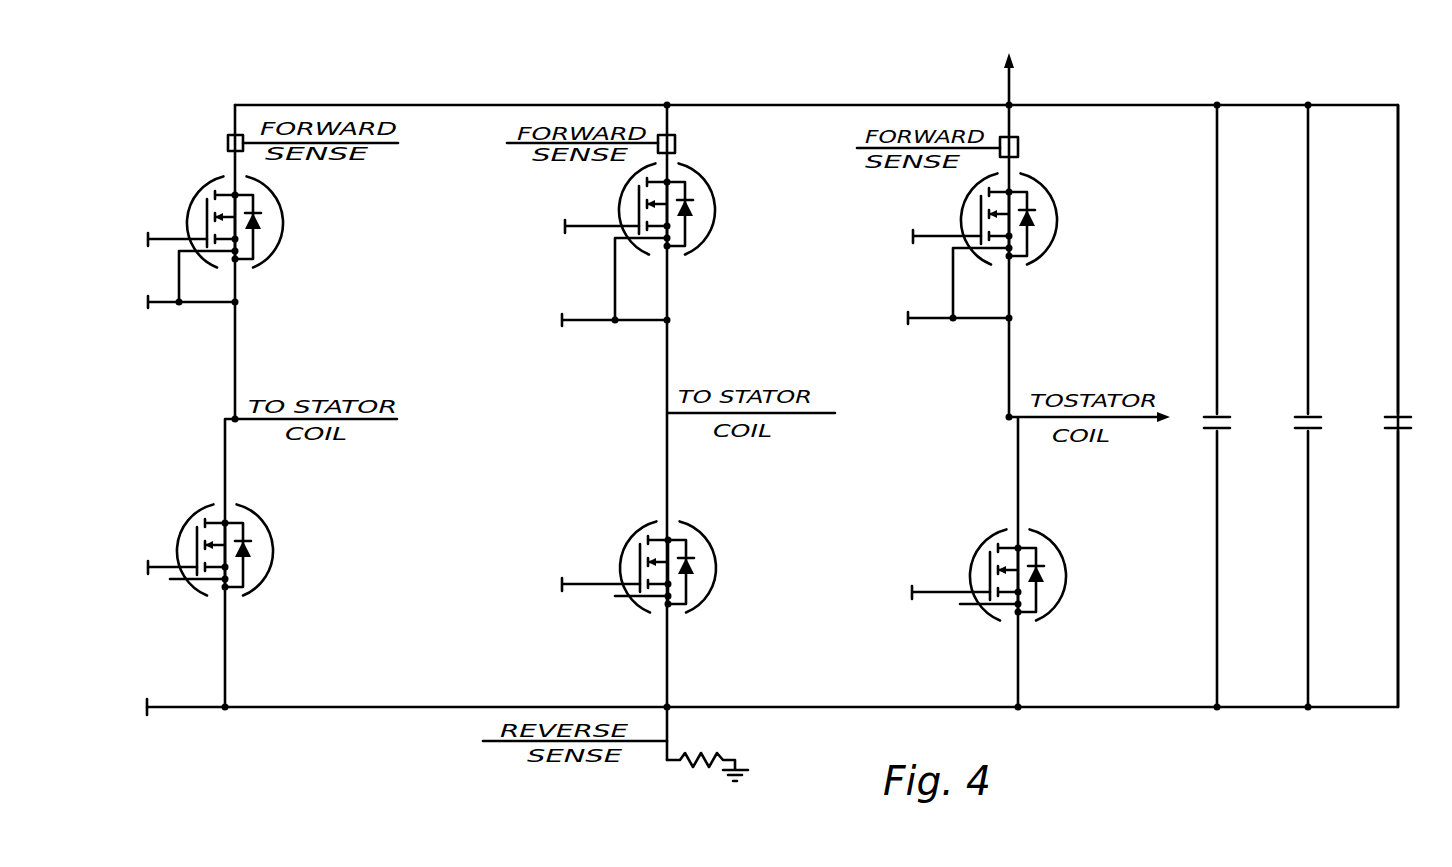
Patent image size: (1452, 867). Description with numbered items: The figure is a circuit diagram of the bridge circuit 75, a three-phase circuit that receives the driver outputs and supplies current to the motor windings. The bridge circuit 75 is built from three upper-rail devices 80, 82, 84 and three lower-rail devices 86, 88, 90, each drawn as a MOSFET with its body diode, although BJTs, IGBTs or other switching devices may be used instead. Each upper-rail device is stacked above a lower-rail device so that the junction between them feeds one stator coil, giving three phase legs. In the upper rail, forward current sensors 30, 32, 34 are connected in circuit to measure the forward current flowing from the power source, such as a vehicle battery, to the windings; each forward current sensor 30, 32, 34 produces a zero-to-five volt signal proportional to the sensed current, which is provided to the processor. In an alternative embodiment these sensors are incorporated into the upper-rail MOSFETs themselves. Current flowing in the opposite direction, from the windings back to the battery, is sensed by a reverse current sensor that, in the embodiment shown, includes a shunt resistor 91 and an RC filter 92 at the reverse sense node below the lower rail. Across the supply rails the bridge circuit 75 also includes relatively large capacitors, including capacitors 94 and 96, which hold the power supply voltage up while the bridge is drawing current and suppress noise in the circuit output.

The forward current sensor 30 is at (228, 143).
The forward current sensor 32 is at (675, 140).
The forward current sensor 34 is at (1018, 147).
The bridge circuit 75 is at (755, 85).
The upper-rail device 80 is at (273, 195).
The upper-rail device 82 is at (693, 177).
The upper-rail device 84 is at (1037, 190).
The lower-rail device 86 is at (258, 517).
The lower-rail device 88 is at (693, 535).
The lower-rail device 90 is at (1040, 545).
The shunt resistor 91 is at (697, 755).
The RC filter 92 is at (1234, 398).
The capacitor 94 is at (1329, 398).
The capacitor 96 is at (1410, 398).